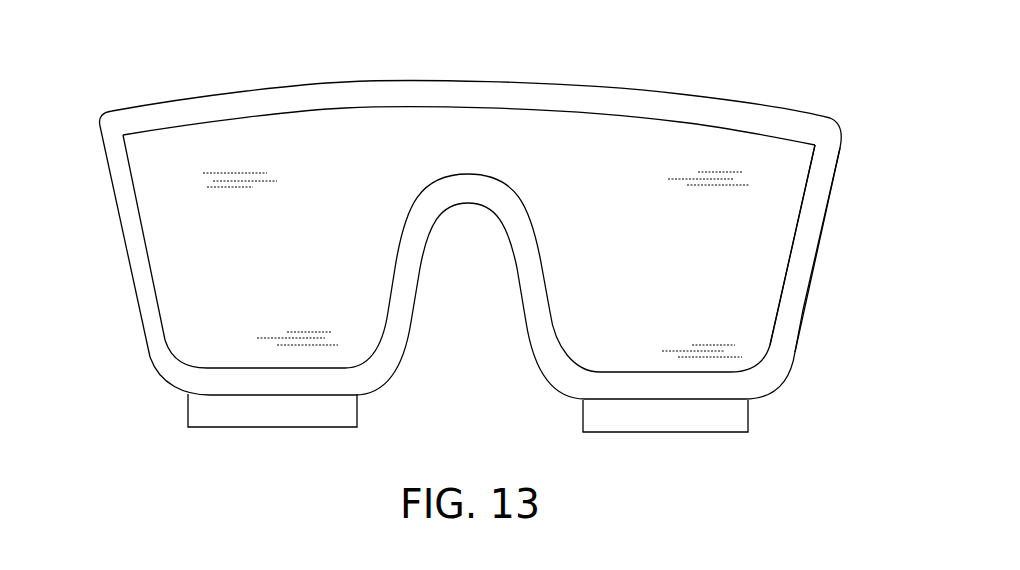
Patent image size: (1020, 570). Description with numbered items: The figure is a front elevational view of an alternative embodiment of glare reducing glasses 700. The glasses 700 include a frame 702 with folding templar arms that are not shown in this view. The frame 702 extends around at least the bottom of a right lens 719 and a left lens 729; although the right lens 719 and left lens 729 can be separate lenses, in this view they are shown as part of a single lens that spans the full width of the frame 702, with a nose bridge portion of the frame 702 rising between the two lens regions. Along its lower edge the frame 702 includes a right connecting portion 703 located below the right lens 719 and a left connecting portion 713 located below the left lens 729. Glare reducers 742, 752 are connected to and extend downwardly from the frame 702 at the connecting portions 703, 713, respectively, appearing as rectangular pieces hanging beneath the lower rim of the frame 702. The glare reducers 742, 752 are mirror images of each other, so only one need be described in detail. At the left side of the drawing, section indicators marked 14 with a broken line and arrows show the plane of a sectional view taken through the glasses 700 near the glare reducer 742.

The glare reducing glasses 700 is at (736, 47).
The frame 702 is at (192, 88).
The right connecting portion 703 is at (156, 375).
The left connecting portion 713 is at (556, 386).
The right lens 719 is at (173, 225).
The left lens 729 is at (770, 241).
The glare reducer 742 is at (190, 407).
The glare reducer 752 is at (752, 414).
The section line 14- 14 is at (57, 100).